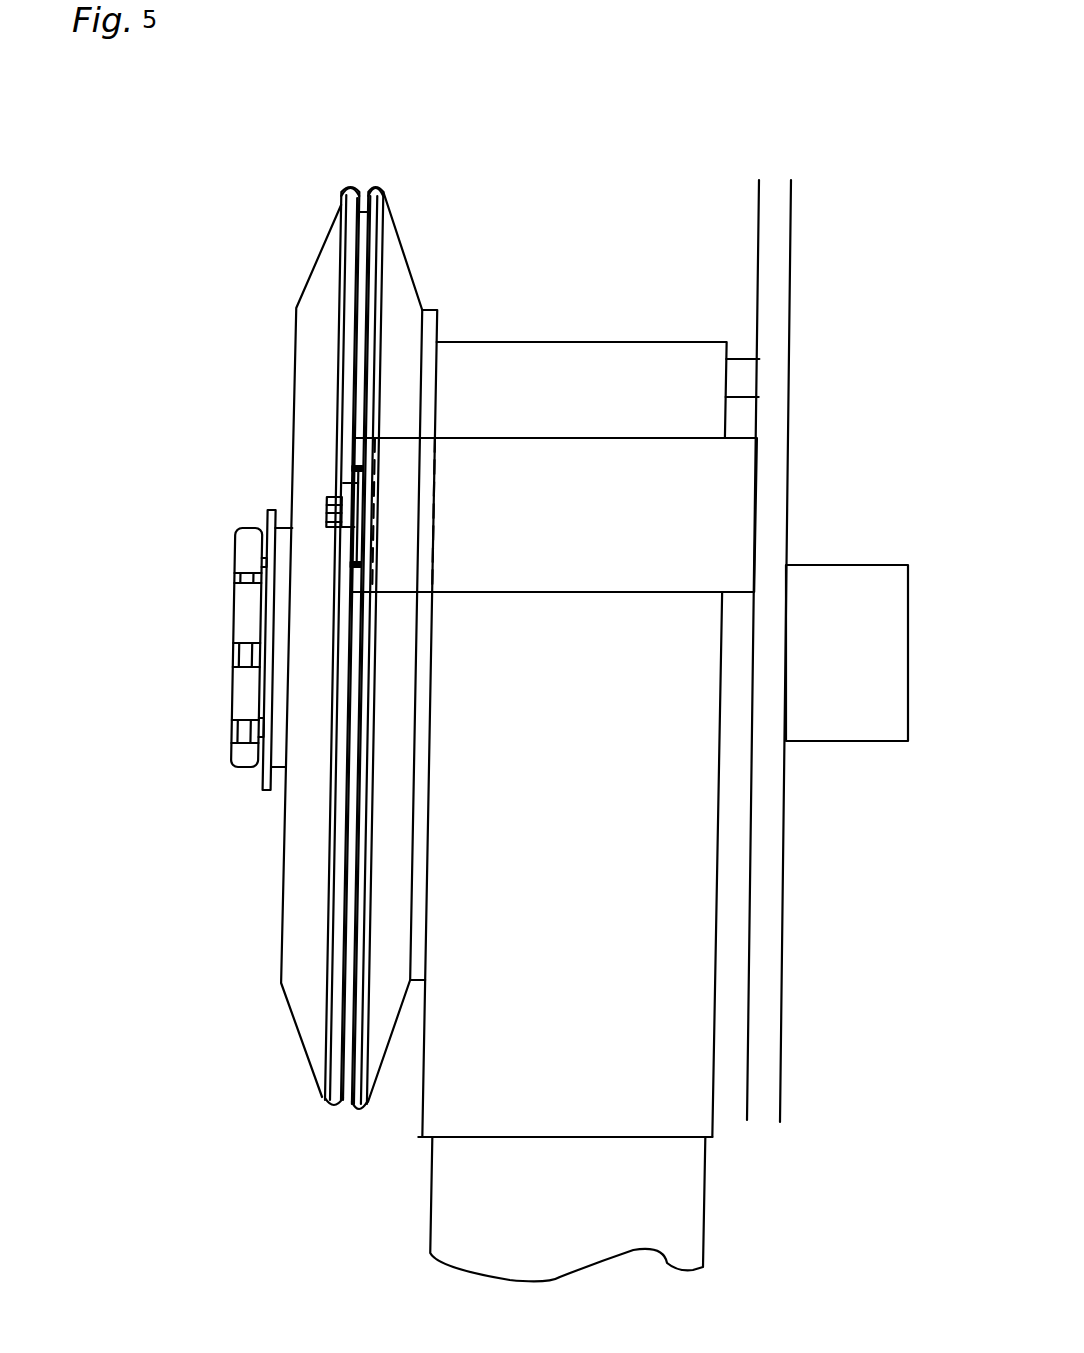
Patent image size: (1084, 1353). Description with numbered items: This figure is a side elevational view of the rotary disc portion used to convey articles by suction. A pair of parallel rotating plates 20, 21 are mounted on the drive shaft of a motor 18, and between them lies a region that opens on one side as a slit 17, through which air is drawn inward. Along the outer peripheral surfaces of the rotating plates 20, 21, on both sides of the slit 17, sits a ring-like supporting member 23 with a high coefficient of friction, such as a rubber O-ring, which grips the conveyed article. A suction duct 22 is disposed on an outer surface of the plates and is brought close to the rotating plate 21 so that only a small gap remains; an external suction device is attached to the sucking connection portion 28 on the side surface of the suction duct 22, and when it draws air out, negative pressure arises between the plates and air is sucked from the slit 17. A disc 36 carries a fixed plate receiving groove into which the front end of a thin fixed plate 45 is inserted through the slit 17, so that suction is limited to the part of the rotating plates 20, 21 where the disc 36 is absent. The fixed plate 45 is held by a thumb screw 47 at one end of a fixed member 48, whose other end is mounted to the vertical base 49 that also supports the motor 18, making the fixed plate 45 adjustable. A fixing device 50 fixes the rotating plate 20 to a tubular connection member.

The slit 17 is at (356, 1102).
The motor 18 is at (837, 710).
The rotating plate 20 is at (322, 278).
The rotating plate 21 is at (395, 312).
The suction duct 22 is at (521, 365).
The supporting member 23 is at (365, 188).
The sucking connection portion 28 is at (686, 1197).
The disc 36 is at (356, 1079).
The fixed plate 45 is at (343, 483).
The thumb screw 47 is at (326, 499).
The fixed member 48 is at (724, 515).
The vertical base 49 is at (765, 1024).
The fixing device 50 is at (232, 622).